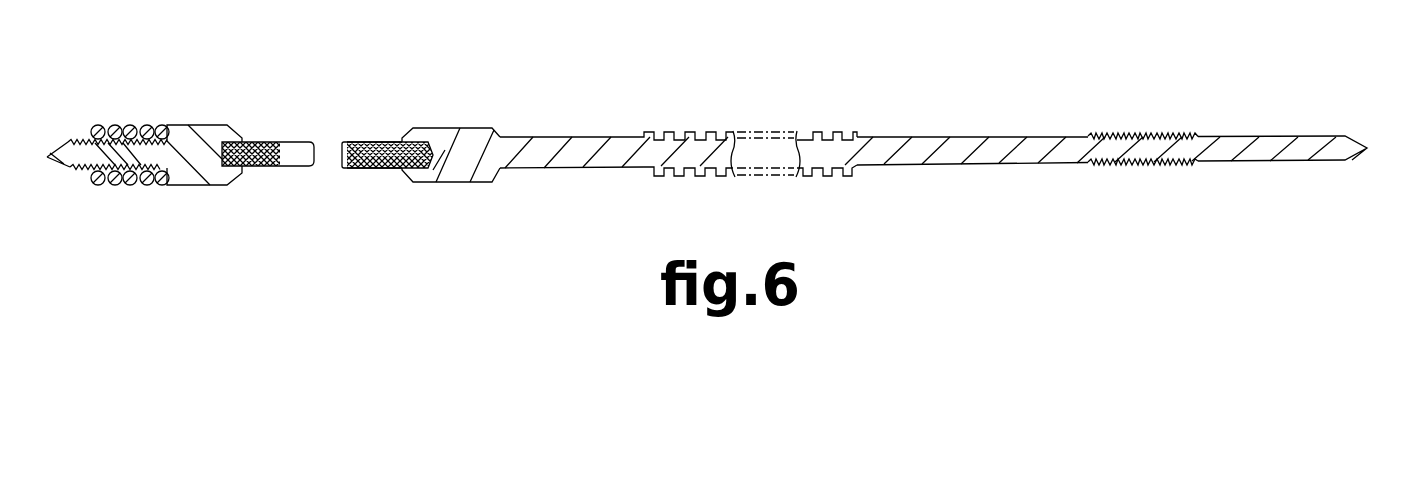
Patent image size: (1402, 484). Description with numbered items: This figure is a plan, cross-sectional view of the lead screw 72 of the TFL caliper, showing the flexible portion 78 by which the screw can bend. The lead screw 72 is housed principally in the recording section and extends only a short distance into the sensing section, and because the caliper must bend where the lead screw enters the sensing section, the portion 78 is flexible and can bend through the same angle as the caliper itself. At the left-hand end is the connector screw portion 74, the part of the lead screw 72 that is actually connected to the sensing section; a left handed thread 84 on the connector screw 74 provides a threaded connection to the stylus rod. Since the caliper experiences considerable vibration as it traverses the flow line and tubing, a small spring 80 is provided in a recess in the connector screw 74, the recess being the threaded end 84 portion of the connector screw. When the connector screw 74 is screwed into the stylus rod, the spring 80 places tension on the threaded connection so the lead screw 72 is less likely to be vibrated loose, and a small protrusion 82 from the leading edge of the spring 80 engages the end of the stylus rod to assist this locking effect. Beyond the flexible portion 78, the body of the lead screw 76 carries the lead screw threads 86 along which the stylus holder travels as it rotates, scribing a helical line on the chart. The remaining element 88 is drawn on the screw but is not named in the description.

The lead screw 72 is at (581, 138).
The connector screw portion 74 is at (207, 137).
The lead screw 76 is at (528, 142).
The flexible portion 78 is at (358, 141).
The spring 80 is at (130, 137).
The protrusion 82 is at (95, 140).
The left handed thread 84 is at (83, 170).
The lead screw threads 86 is at (810, 132).
The fine thread section 88 is at (1143, 136).